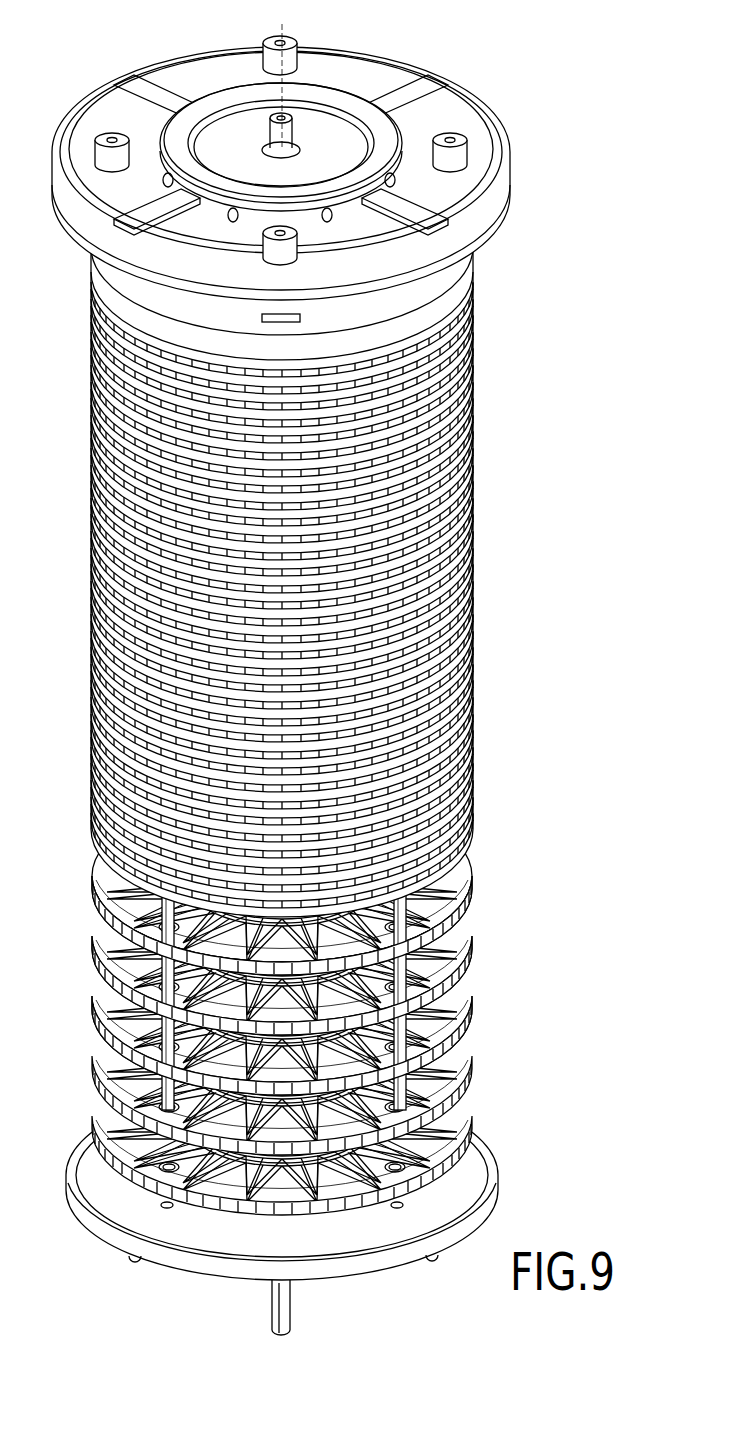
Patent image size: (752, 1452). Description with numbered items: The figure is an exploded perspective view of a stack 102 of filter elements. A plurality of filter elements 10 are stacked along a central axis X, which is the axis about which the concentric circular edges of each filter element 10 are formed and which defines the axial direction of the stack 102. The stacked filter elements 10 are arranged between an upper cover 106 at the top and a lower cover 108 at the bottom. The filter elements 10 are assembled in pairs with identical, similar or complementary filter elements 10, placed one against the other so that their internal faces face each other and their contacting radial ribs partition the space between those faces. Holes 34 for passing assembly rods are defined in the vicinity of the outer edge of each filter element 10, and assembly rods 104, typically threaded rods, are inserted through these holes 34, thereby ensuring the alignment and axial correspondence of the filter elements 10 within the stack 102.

The upper cover 106 is at (446, 110).
The stack 102 is at (532, 355).
The filter element 10 is at (466, 914).
The assembly rods 104 is at (466, 1078).
The holes 34 is at (462, 1152).
The lower cover 108 is at (160, 1254).
The central axis X is at (282, 26).